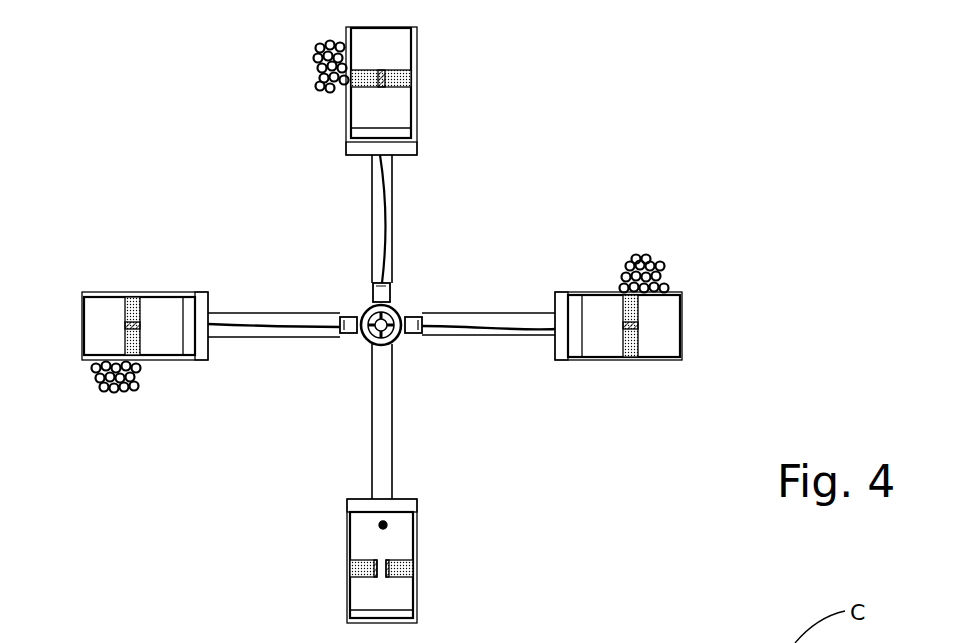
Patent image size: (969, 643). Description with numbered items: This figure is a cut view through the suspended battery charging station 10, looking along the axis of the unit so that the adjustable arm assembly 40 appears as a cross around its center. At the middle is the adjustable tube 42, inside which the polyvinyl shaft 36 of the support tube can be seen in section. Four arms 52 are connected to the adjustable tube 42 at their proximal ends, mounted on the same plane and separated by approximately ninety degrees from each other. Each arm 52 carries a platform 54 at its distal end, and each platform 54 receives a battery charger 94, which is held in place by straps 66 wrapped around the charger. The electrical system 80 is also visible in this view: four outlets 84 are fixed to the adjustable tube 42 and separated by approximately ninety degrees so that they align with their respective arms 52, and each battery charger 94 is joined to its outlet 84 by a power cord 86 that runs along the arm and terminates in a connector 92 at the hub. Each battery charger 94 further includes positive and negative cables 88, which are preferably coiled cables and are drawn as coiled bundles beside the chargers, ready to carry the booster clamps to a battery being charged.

The suspended battery charging station 10 is at (630, 84).
The polyvinyl shaft 36 is at (395, 310).
The adjustable arm assembly 40 is at (475, 297).
The adjustable tube 42 is at (392, 343).
The arm 52 is at (372, 178).
The platform 54 is at (416, 70).
The strap 66 is at (140, 297).
The electrical system 80 is at (638, 244).
The outlet 84 is at (373, 292).
The power cord 86 is at (263, 323).
The positive and negative cables 88 is at (313, 72).
The connector 92 is at (350, 314).
The battery charger 94 is at (390, 32).